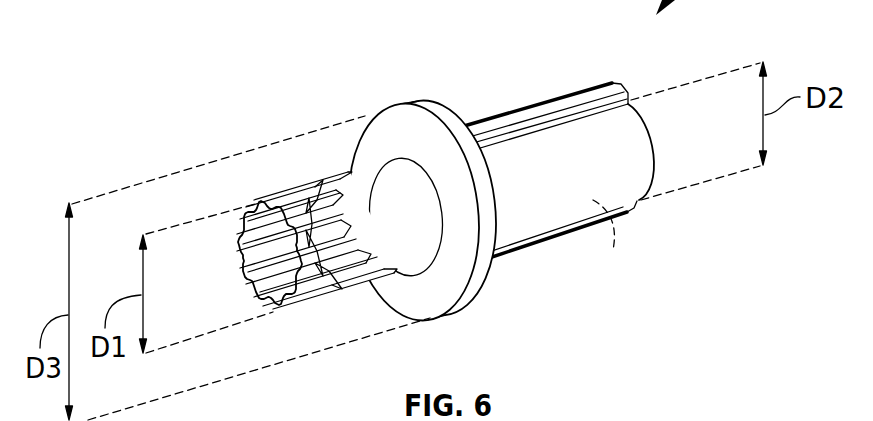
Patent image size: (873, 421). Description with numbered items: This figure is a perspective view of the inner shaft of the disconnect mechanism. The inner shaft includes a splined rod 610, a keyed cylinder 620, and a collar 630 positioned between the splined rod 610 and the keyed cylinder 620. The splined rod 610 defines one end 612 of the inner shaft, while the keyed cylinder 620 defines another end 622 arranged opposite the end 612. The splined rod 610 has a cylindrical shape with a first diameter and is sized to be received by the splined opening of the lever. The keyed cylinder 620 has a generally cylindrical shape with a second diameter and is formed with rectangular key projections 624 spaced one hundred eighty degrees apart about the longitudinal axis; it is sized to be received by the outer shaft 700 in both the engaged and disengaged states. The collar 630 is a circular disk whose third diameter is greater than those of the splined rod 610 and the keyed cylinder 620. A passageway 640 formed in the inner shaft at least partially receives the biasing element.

The splined rod 610 is at (284, 223).
The end 612 is at (262, 271).
The keyed cylinder 620 is at (593, 174).
The end 622 is at (655, 156).
The key projections 624 is at (500, 122).
The collar 630 is at (420, 118).
The passageway 640 is at (613, 244).
The outer shaft 700 is at (673, 420).